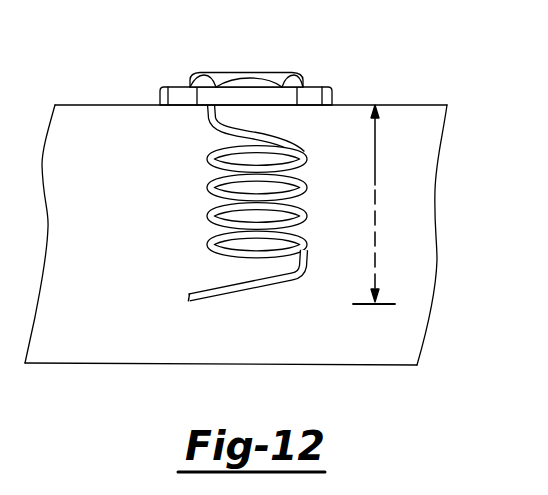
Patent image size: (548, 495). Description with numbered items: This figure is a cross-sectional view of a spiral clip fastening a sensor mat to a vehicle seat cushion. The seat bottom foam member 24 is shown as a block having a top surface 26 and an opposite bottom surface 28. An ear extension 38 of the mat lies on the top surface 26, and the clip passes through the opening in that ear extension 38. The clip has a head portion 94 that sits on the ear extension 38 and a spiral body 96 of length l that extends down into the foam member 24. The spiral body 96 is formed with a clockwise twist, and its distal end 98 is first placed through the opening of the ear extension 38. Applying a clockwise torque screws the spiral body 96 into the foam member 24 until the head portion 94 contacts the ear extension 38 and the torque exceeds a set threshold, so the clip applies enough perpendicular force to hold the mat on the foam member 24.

The seat bottom foam member 24 is at (414, 222).
The top surface 26 is at (124, 105).
The bottom surface 28 is at (52, 363).
The ear extension 38 is at (320, 87).
The head portion 94 is at (228, 72).
The spiral body 96 is at (207, 192).
The distal end 98 is at (186, 298).